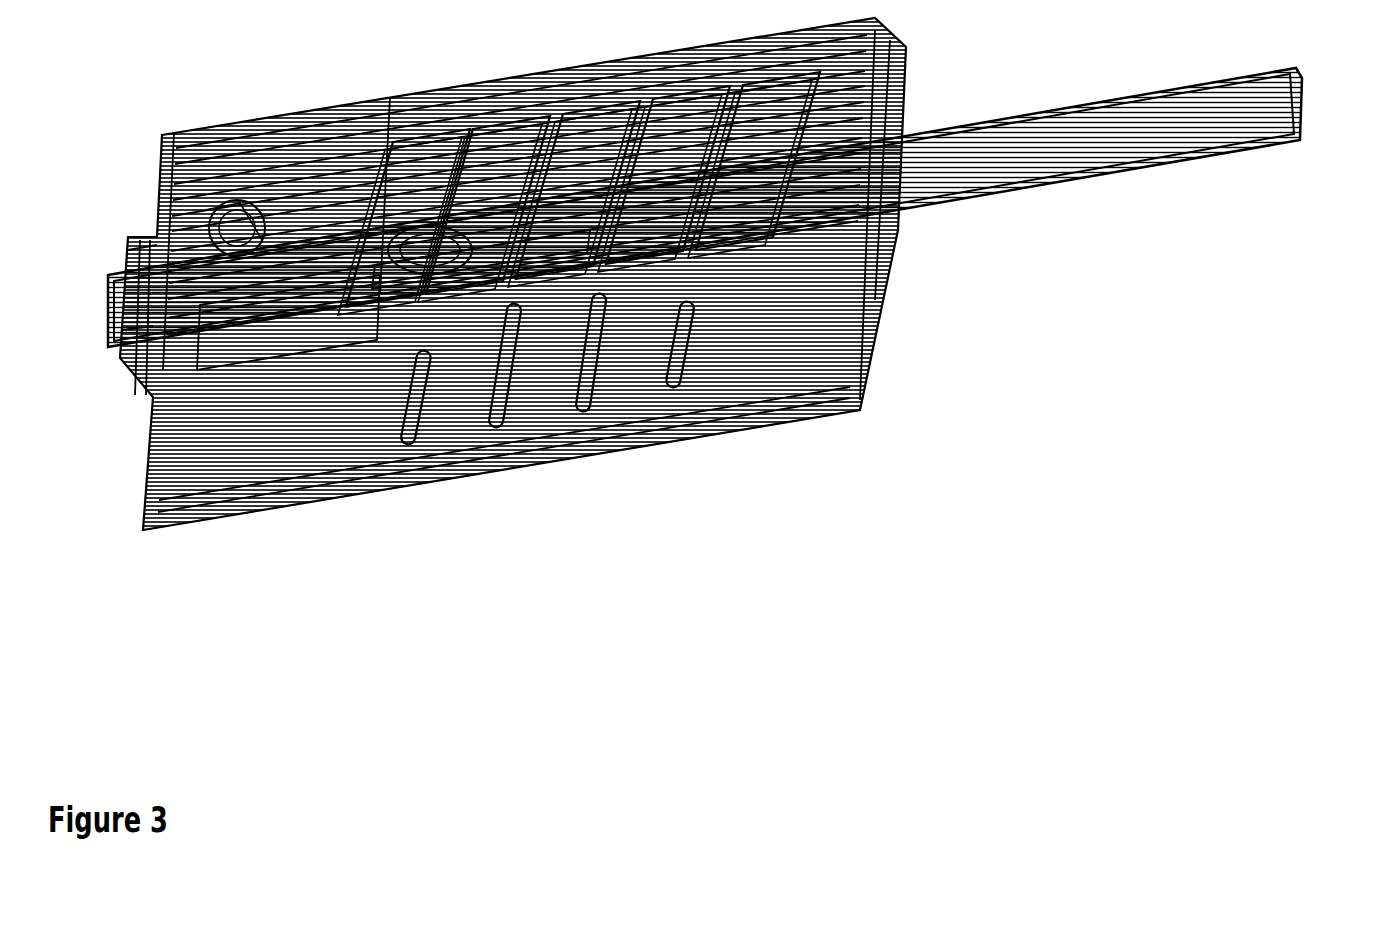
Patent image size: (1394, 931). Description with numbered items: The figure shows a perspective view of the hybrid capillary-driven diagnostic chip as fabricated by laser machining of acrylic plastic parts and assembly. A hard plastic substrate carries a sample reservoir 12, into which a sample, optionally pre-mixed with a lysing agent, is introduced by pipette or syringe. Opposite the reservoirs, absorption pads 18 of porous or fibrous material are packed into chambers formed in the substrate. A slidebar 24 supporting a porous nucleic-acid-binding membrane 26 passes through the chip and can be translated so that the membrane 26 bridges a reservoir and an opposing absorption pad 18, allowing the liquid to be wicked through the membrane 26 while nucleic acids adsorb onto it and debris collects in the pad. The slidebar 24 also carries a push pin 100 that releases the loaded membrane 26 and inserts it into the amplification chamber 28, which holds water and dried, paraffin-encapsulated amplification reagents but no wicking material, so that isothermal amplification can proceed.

The slidebar 24 is at (987, 143).
The adsorbing material 18 is at (690, 115).
The membrane 26 is at (545, 237).
The sample reservoir 12 is at (690, 352).
The push pin 100 is at (237, 235).
The amplification chamber 28 is at (290, 318).